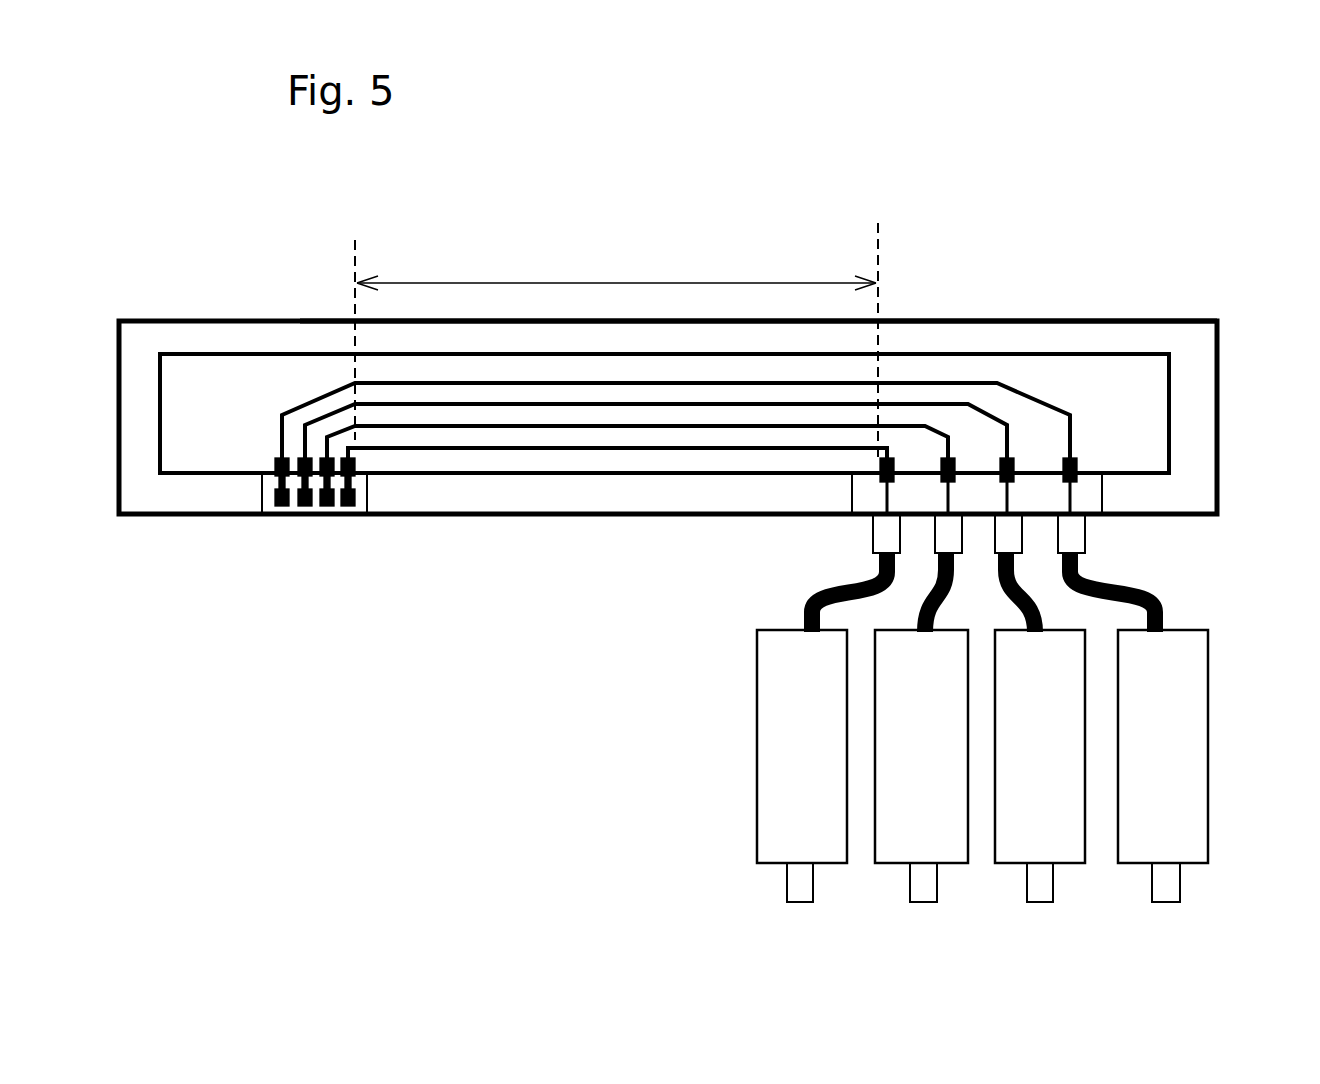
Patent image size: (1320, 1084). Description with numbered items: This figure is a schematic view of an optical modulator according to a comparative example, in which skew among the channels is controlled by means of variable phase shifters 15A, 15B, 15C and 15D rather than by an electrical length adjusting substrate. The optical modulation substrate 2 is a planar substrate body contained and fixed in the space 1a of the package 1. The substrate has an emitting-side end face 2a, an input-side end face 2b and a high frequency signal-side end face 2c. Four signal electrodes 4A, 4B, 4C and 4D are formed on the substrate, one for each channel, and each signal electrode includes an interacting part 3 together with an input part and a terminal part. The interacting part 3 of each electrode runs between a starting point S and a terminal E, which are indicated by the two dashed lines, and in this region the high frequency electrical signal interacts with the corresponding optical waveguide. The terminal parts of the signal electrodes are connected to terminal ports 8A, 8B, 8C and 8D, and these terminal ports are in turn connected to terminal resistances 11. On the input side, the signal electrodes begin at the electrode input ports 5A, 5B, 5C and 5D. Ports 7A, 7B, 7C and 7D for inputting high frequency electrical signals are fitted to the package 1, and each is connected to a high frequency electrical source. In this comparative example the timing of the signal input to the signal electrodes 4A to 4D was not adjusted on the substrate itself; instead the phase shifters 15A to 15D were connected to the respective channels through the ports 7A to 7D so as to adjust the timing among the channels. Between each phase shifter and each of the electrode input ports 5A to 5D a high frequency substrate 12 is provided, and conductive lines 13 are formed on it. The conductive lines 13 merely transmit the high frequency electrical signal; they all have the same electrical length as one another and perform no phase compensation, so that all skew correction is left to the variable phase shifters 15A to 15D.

The package 1 is at (1155, 321).
The space 1a is at (1095, 340).
The optical modulation substrate 2 is at (1061, 367).
The emitting-side end face 2a is at (158, 368).
The input-side end face 2b is at (1172, 385).
The high frequency signal-side end face 2c is at (642, 478).
The interacting part 3 is at (745, 283).
The signal electrode 4A is at (552, 448).
The signal electrode 4B is at (510, 426).
The signal electrode 4C is at (538, 404).
The signal electrode 4D is at (493, 383).
The electrode input port 5A is at (912, 456).
The electrode input port 5B is at (967, 458).
The electrode input port 5C is at (1011, 462).
The electrode input port 5D is at (1078, 465).
The port 7A is at (872, 530).
The port 7B is at (955, 540).
The port 7C is at (1020, 540).
The port 7D is at (1088, 535).
The terminal port 8A is at (357, 462).
The terminal port 8B is at (318, 482).
The terminal port 8C is at (300, 482).
The terminal port 8D is at (277, 480).
The terminal resistance 11 is at (363, 502).
The high frequency substrate 12 is at (1108, 493).
The conductive line 13 is at (1068, 495).
The variable phase shifter 15A is at (830, 748).
The variable phase shifter 15B is at (950, 748).
The variable phase shifter 15C is at (1072, 748).
The variable phase shifter 15D is at (1195, 748).
The terminal of the interacting part E is at (357, 256).
The starting point of the interacting part S is at (880, 258).